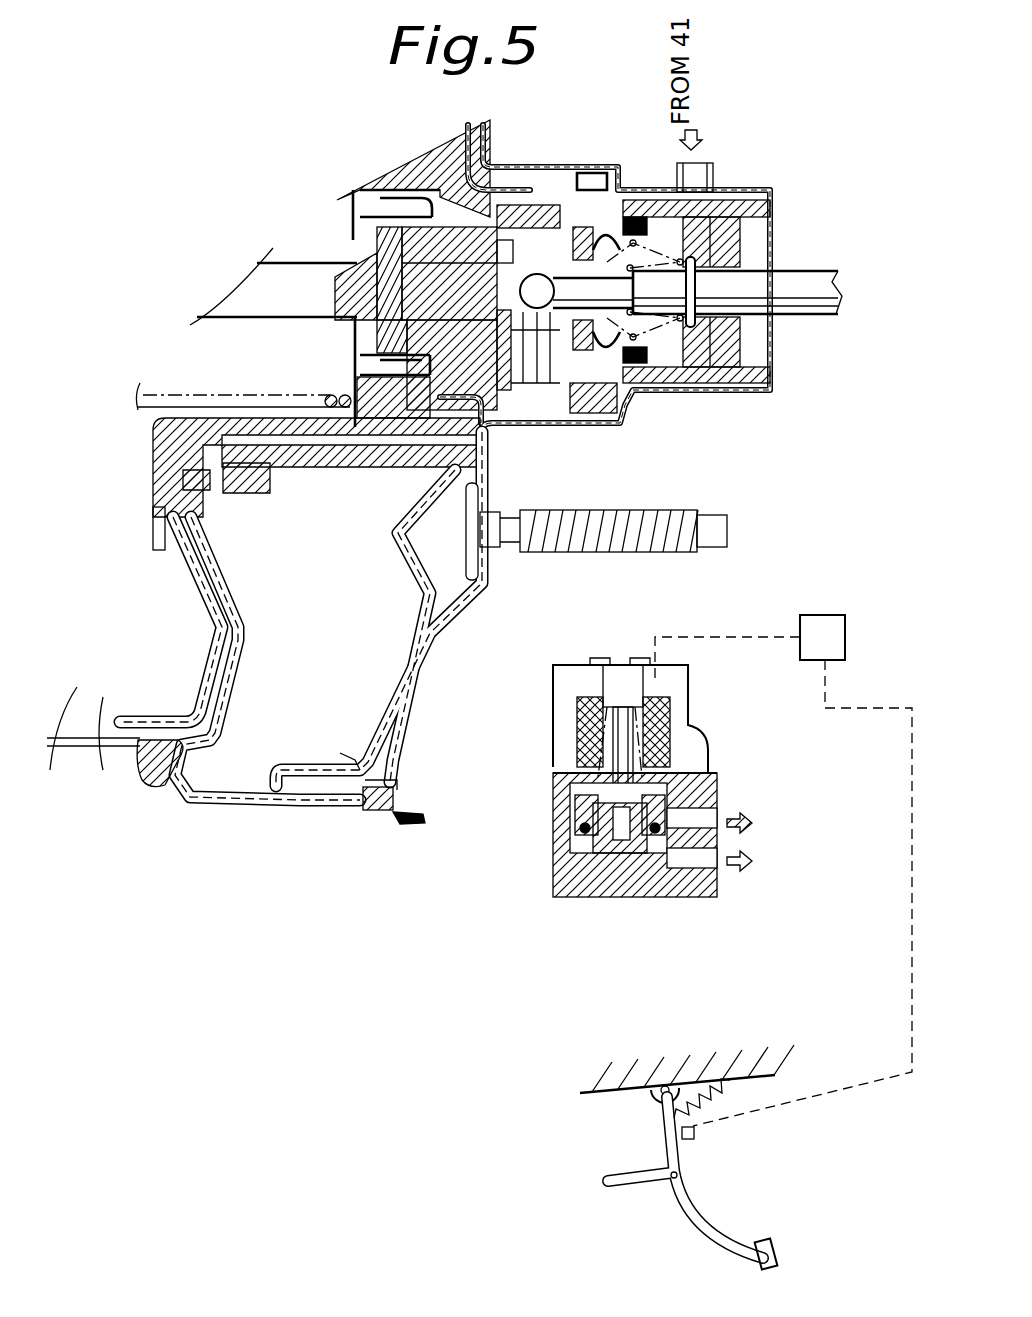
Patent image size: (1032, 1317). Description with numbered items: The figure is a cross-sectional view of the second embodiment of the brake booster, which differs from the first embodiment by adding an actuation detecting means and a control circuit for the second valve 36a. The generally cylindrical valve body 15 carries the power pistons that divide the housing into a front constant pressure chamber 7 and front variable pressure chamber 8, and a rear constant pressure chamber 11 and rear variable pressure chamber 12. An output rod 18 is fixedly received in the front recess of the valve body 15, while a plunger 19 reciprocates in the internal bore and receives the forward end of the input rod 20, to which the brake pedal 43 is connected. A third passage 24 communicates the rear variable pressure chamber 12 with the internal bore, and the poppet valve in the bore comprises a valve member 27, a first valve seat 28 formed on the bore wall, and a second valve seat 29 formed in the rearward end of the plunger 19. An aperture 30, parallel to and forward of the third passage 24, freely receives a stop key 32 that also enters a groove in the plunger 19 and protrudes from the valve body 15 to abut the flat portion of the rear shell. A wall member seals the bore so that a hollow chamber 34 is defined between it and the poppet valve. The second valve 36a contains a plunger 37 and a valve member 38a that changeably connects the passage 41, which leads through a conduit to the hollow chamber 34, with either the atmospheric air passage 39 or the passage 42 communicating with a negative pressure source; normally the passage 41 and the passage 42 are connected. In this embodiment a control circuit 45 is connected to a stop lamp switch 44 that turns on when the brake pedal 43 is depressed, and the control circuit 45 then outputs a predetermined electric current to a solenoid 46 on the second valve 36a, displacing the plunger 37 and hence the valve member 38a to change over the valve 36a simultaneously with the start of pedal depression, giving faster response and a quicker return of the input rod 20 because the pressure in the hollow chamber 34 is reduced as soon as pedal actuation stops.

The front constant pressure chamber 7 is at (93, 742).
The front variable pressure chamber 8 is at (175, 783).
The rear constant pressure chamber 11 is at (400, 610).
The rear variable pressure chamber 12 is at (453, 587).
The valve body 15 is at (657, 190).
The output rod 18 is at (257, 290).
The plunger 19 is at (457, 273).
The input rod 20 is at (810, 283).
The third passage 24 is at (550, 377).
The valve member 27 is at (607, 197).
The first valve seat 28 is at (573, 213).
The second valve seat 29 is at (547, 223).
The aperture 30 is at (517, 377).
The stop key 32 is at (420, 435).
The hollow chamber 34 is at (713, 217).
The second valve 36a is at (682, 819).
The plunger 37 is at (612, 850).
The valve member 38a is at (578, 832).
The atmospheric air passage 39 is at (583, 810).
The passage 41 is at (716, 867).
The passage 42 is at (720, 840).
The brake pedal 43 is at (705, 1216).
The switch 44 is at (695, 1136).
The control circuit 45 is at (847, 640).
The solenoid 46 is at (667, 720).